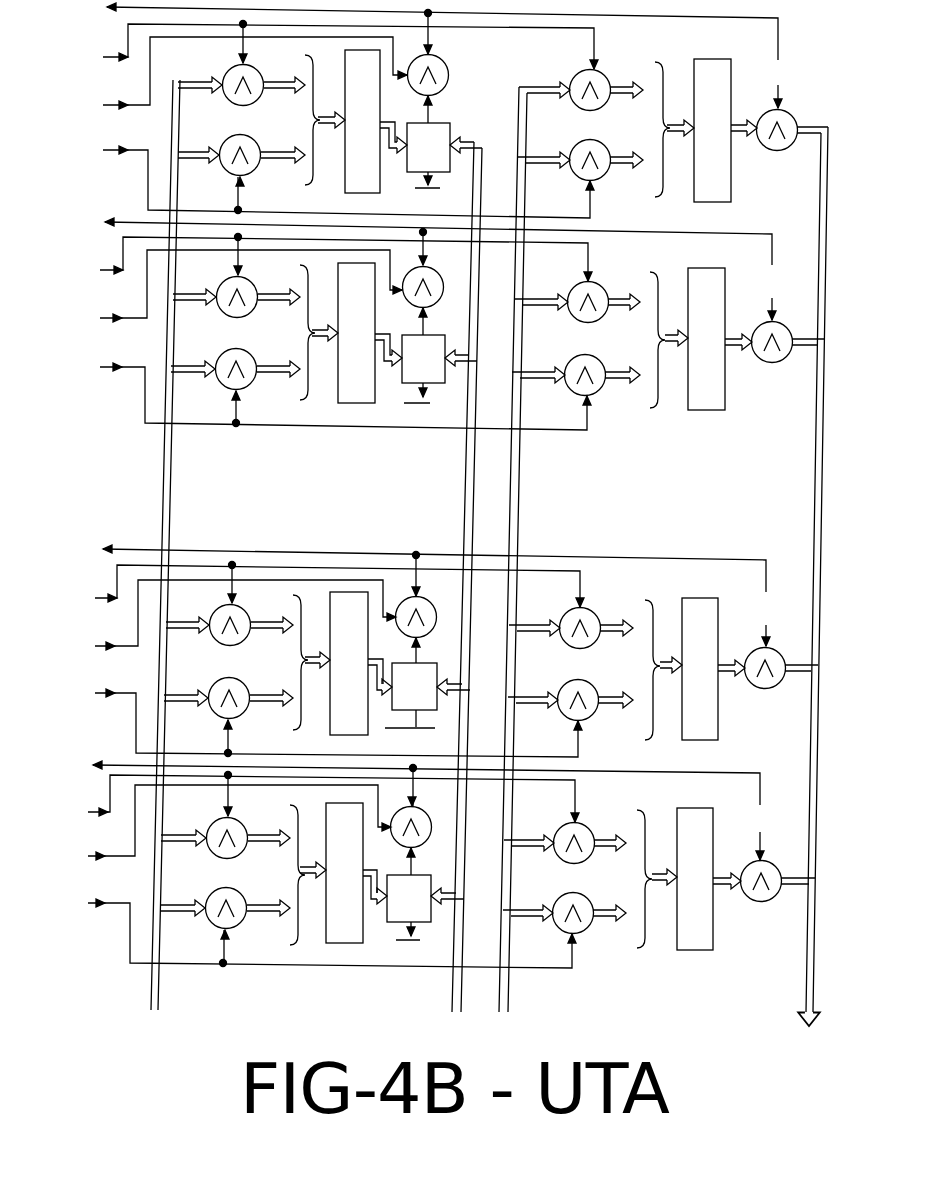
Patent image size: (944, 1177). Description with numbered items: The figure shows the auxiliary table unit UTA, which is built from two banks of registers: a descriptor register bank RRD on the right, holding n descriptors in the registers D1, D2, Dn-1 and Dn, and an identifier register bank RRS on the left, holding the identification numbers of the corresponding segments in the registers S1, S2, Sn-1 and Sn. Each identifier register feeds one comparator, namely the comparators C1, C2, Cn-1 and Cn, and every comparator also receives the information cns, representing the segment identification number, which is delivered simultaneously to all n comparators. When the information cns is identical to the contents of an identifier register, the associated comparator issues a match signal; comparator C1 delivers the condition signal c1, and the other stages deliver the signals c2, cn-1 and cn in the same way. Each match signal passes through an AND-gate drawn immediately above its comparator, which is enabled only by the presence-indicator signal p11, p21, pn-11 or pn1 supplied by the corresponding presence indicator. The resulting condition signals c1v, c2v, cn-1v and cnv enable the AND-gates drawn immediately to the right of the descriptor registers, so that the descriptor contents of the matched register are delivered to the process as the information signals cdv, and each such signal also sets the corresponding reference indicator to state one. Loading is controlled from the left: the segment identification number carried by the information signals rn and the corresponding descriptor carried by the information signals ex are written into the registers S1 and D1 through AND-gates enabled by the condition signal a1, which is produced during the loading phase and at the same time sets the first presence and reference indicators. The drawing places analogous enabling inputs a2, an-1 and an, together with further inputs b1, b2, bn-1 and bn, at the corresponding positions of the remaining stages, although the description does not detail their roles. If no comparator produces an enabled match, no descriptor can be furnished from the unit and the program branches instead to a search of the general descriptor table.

The condition signal c1v is at (421, 54).
The condition signal a1 is at (328, 45).
The condition signal p11 is at (231, 77).
The operand b input, stage 1 b1 is at (327, 178).
The identifier register S1 is at (362, 121).
The comparator C1 is at (428, 147).
The condition signal c1 is at (430, 154).
The descriptor register D1 is at (712, 130).
The condition signal c2v is at (421, 265).
The operand a input, stage 2 a2 is at (325, 259).
The condition signal p21 is at (228, 290).
The operand b input, stage 2 b2 is at (326, 393).
The identifier register S2 is at (356, 333).
The comparator C2 is at (423, 359).
The condition signal c2 is at (416, 369).
The descriptor register D2 is at (706, 339).
The condition signal cn-1v is at (418, 587).
The operand a input, stage n-1 an-1 is at (312, 586).
The condition signal pn-11 is at (216, 618).
The operand b input, stage n-1 bn-1 is at (312, 719).
The identifier register Sn-1 is at (351, 663).
The comparator Cn-1 is at (417, 686).
The condition signal cn-1 is at (412, 696).
The descriptor register Dn-1 is at (700, 669).
The condition signal cnv is at (403, 807).
The operand a input, stage n an is at (314, 799).
The condition signal pn1 is at (215, 827).
The operand b input, stage n bn is at (310, 930).
The identifier register Sn is at (344, 873).
The comparator Cn is at (409, 898).
The condition signal cn is at (414, 906).
The descriptor register Dn is at (695, 879).
The information signals rn is at (160, 560).
The information cns is at (453, 594).
The information signals ex is at (507, 566).
The descriptor contents cdv is at (794, 590).
The identifier register bank RRS is at (333, 1015).
The descriptor register bank RRD is at (684, 1009).